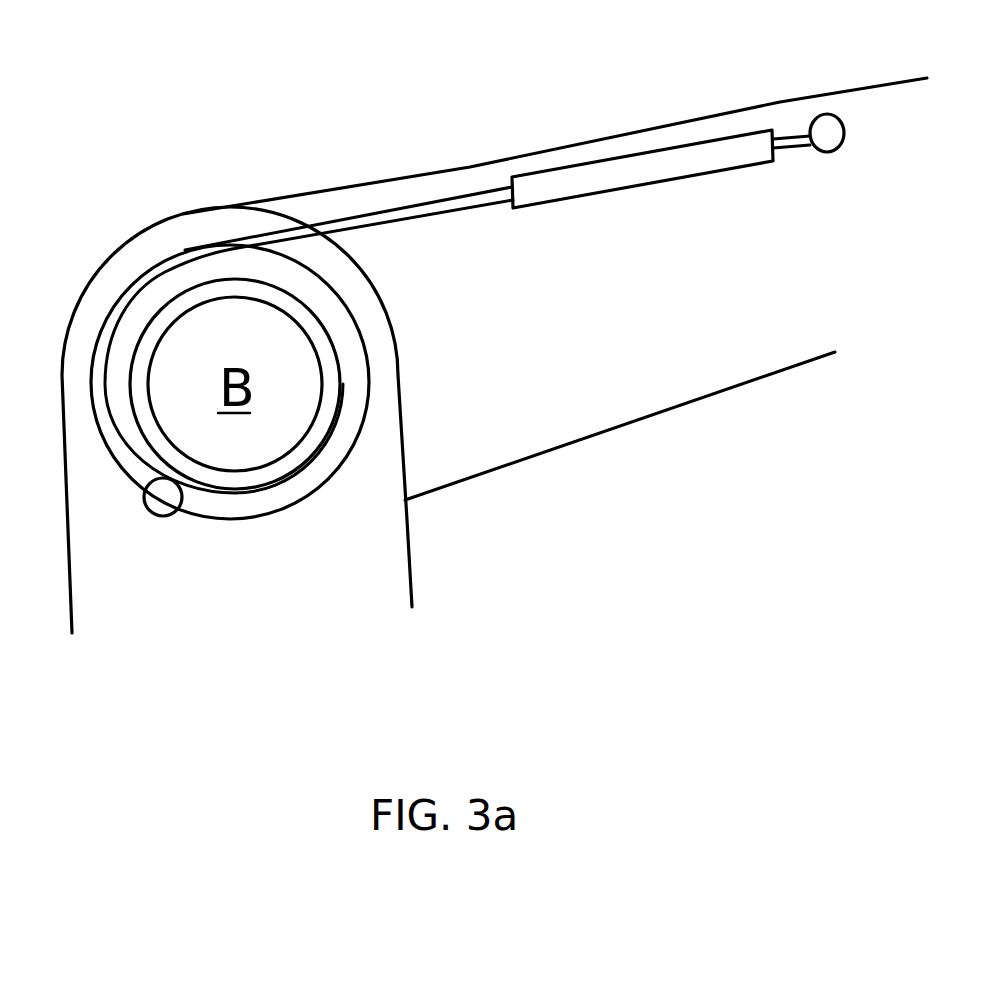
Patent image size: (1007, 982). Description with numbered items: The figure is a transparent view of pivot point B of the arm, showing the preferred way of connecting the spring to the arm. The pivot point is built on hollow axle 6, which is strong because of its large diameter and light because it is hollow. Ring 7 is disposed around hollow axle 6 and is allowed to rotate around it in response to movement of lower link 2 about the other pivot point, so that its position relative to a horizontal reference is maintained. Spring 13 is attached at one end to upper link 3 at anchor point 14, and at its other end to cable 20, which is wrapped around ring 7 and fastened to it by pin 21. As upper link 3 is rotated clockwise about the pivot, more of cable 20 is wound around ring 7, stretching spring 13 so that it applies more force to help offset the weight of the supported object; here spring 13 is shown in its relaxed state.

The lower link 2 is at (253, 623).
The upper link 3 is at (669, 355).
The hollow axle 6 is at (243, 288).
The ring 7 is at (195, 275).
The spring 13 is at (597, 170).
The anchor point 14 is at (823, 115).
The cable 20 is at (433, 207).
The pin 21 is at (150, 516).